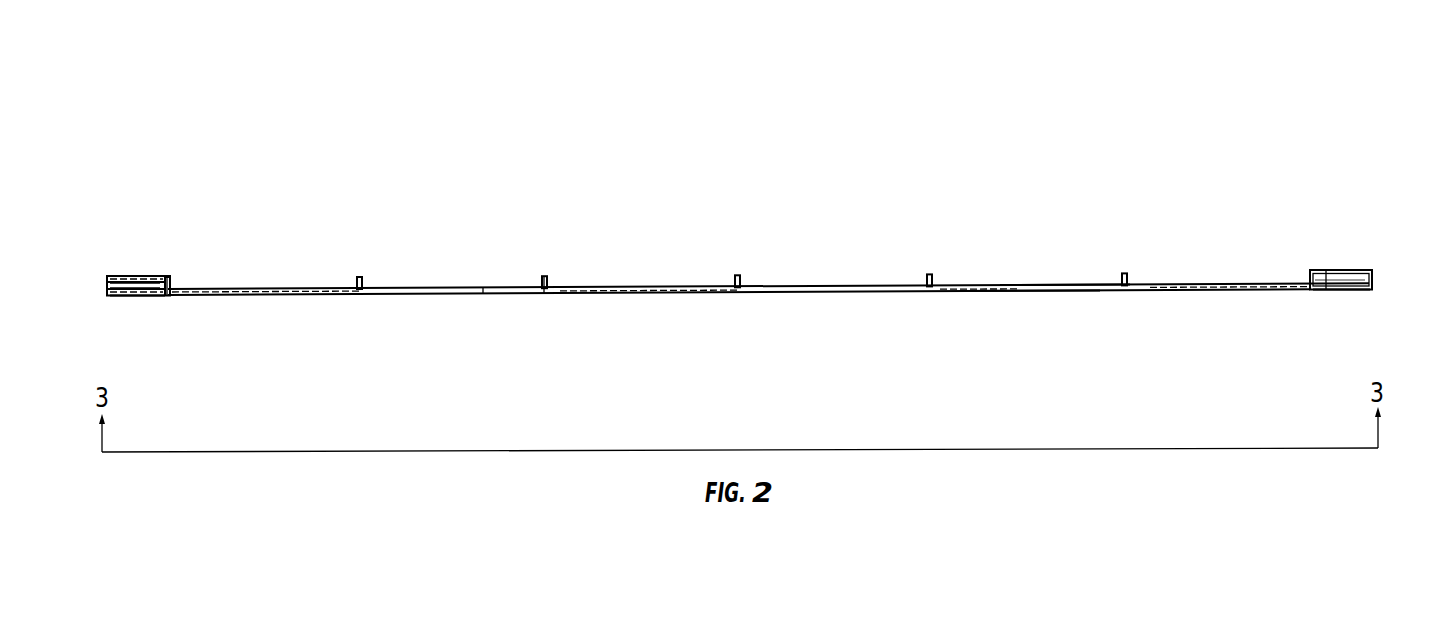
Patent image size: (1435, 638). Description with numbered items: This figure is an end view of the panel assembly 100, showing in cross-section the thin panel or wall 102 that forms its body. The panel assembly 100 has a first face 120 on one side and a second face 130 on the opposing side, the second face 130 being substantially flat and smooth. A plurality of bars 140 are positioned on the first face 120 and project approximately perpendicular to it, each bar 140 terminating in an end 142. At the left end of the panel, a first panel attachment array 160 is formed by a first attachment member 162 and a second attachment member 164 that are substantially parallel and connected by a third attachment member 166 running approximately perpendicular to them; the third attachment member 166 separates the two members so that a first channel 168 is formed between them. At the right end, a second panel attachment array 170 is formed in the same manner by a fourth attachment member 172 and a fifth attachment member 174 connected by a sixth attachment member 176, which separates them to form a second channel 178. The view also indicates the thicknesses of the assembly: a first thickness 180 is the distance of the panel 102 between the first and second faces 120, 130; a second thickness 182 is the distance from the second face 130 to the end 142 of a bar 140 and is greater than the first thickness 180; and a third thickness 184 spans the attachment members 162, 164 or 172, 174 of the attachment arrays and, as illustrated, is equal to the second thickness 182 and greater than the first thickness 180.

The panel assembly 100 is at (1124, 184).
The panel or wall 102 is at (648, 307).
The first face 120 is at (1035, 284).
The second face 130 is at (1018, 294).
The bars 140 is at (365, 288).
The end of bar 142 is at (358, 276).
The first panel attachment array 160 is at (112, 260).
The first attachment member 162 is at (142, 297).
The second attachment member 164 is at (146, 276).
The third attachment member 166 is at (171, 287).
The first channel 168 is at (114, 285).
The second panel attachment array 170 is at (1385, 255).
The fourth attachment member 172 is at (1345, 290).
The fifth attachment member 174 is at (1352, 270).
The sixth attachment member 176 is at (1310, 278).
The second channel 178 is at (1366, 280).
The first thickness 180 is at (483, 357).
The second thickness 182 is at (544, 357).
The third thickness 184 is at (167, 362).